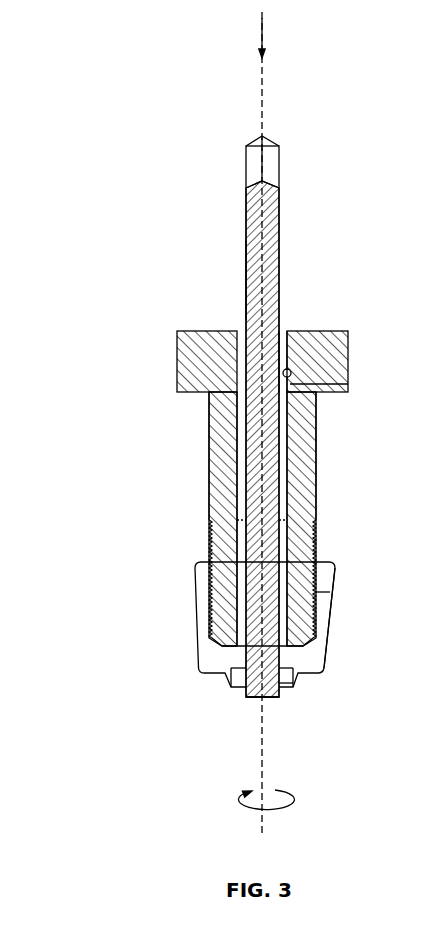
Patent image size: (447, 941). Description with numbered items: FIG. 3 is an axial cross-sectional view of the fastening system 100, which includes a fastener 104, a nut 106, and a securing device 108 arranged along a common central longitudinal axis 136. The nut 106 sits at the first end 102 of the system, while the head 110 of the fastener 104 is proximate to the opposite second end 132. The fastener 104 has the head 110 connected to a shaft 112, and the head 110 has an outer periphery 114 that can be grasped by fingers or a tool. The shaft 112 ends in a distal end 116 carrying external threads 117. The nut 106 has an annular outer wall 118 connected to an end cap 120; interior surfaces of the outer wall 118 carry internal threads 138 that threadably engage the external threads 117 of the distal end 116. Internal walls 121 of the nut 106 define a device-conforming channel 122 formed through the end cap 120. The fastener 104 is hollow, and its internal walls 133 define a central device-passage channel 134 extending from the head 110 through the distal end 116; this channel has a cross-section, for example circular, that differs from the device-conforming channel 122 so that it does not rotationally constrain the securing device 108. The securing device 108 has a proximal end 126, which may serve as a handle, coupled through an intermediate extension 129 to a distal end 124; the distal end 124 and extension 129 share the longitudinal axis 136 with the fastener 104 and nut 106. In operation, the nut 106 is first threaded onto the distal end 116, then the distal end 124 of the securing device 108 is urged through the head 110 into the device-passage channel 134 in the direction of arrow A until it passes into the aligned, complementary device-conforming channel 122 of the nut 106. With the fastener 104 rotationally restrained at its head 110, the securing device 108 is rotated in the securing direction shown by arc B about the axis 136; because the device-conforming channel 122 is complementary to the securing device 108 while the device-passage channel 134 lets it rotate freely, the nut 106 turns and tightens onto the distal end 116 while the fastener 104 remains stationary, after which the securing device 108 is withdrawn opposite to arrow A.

The fastening system 100 is at (132, 204).
The first end 102 is at (213, 707).
The fastener 104 is at (203, 434).
The nut 106 is at (344, 574).
The securing device 108 is at (283, 229).
The head 110 is at (348, 339).
The shaft 112 is at (316, 445).
The outer periphery 114 is at (177, 361).
The distal end 116 is at (210, 544).
The external threads 117 is at (316, 533).
The annular outer wall 118 is at (333, 616).
The end cap 120 is at (297, 684).
The internal walls 121 is at (243, 669).
The device-conforming channel 122 is at (282, 684).
The distal end 124 is at (250, 698).
The proximal end 126 is at (280, 164).
The intermediate extension 129 is at (245, 277).
The second end 132 is at (220, 198).
The internal walls 133 is at (348, 385).
The device-passage channel 134 is at (285, 326).
The central longitudinal axis 136 is at (262, 96).
The internal threads 138 is at (316, 592).
The arrow A is at (262, 36).
The arc B is at (240, 806).